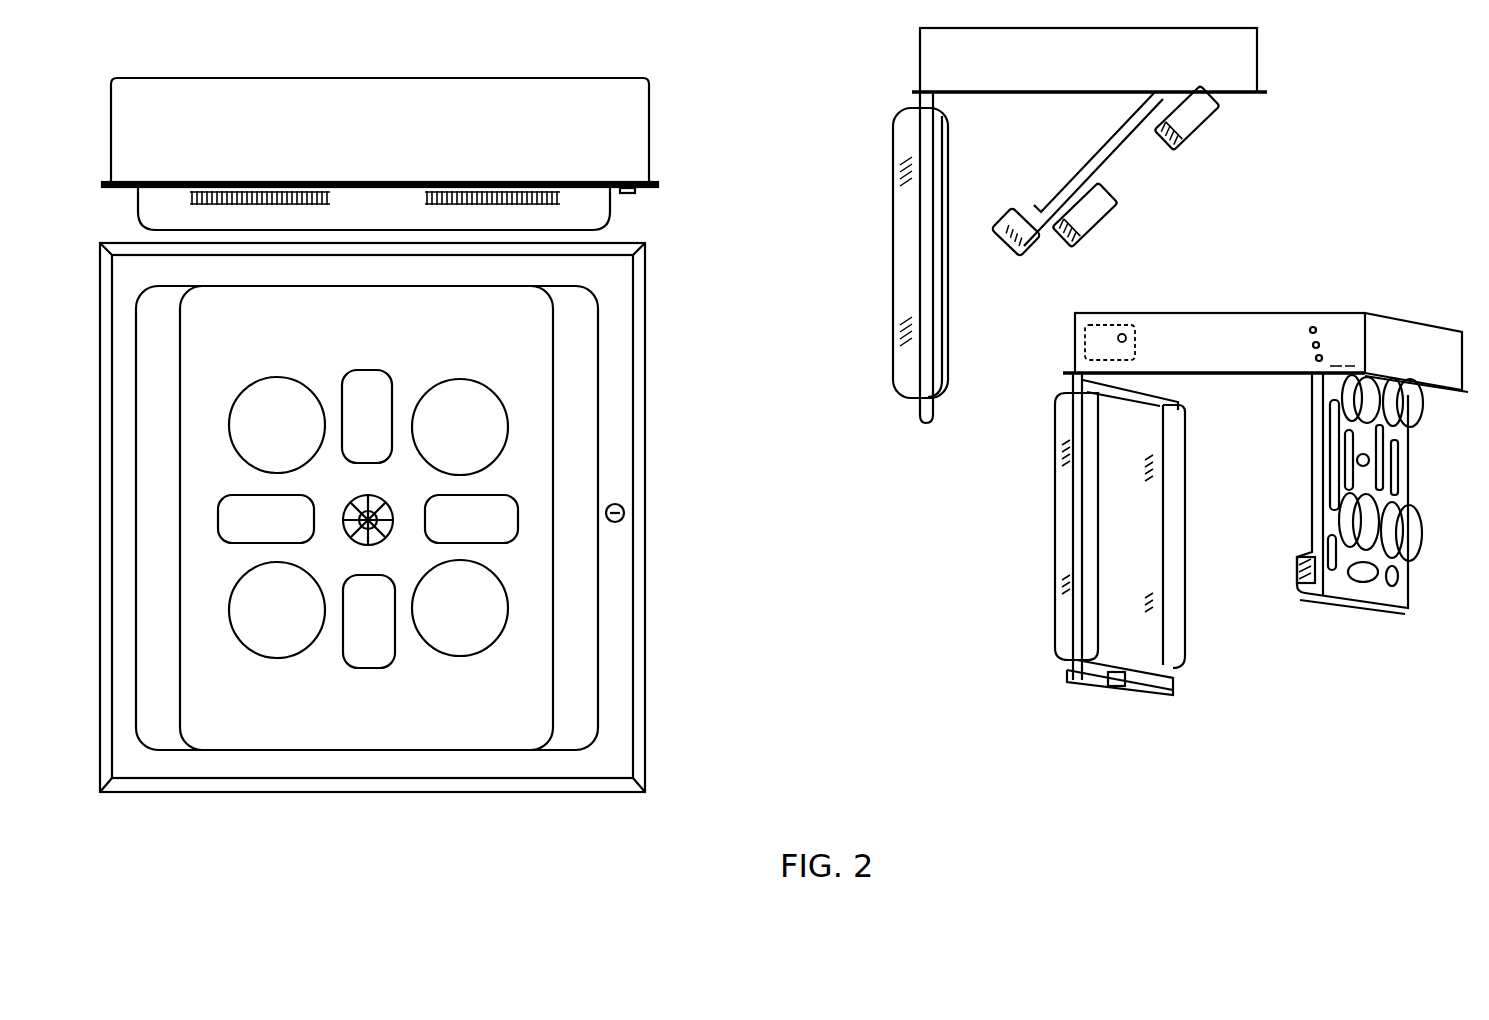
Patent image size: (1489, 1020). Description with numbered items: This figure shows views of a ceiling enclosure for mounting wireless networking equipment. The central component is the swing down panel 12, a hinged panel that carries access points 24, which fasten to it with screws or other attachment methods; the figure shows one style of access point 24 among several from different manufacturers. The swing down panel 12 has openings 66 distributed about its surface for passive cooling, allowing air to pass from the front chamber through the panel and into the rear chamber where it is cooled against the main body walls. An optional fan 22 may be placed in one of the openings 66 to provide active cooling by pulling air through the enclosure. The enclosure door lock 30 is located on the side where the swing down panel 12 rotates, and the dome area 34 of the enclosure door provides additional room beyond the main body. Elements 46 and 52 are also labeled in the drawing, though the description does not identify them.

The swing down panel 12 is at (1368, 600).
The fan 22 is at (380, 508).
The access points 24 is at (1197, 113).
The enclosure door lock 30 is at (1092, 688).
The dome area 34 is at (1128, 633).
The connector port 46 is at (1137, 338).
The tab 52 is at (1300, 585).
The openings 66 is at (378, 400).